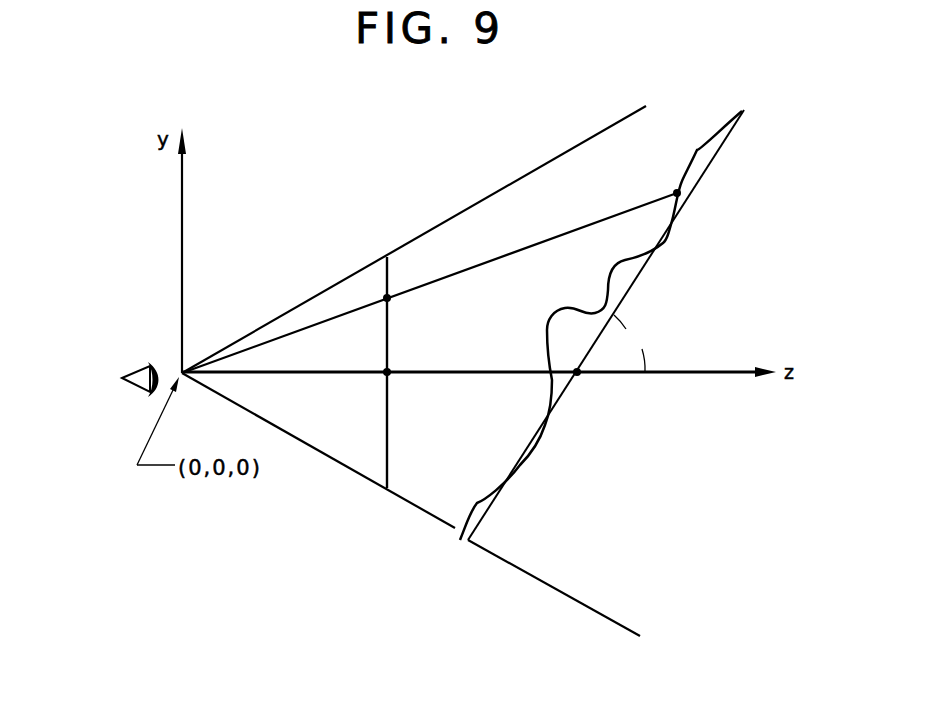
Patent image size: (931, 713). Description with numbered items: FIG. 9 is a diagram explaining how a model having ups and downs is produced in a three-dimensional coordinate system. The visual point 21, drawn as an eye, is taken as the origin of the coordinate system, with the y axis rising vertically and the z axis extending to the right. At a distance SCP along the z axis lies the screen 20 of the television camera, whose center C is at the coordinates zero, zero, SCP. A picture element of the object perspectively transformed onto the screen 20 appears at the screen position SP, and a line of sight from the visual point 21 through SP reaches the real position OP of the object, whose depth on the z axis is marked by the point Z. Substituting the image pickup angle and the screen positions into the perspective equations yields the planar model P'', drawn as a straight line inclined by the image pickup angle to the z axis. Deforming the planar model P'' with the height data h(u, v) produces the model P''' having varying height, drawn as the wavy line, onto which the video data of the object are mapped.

The screen 20 is at (386, 296).
The visual point 21 is at (131, 391).
The planar model P'' is at (632, 325).
The model having varying height P''' is at (601, 312).
The position of the object perspectively transformed onto the screen SP is at (457, 289).
The center of the screen C is at (382, 378).
The z coordinate of the object position Z is at (615, 391).
The position of the object OP is at (744, 200).